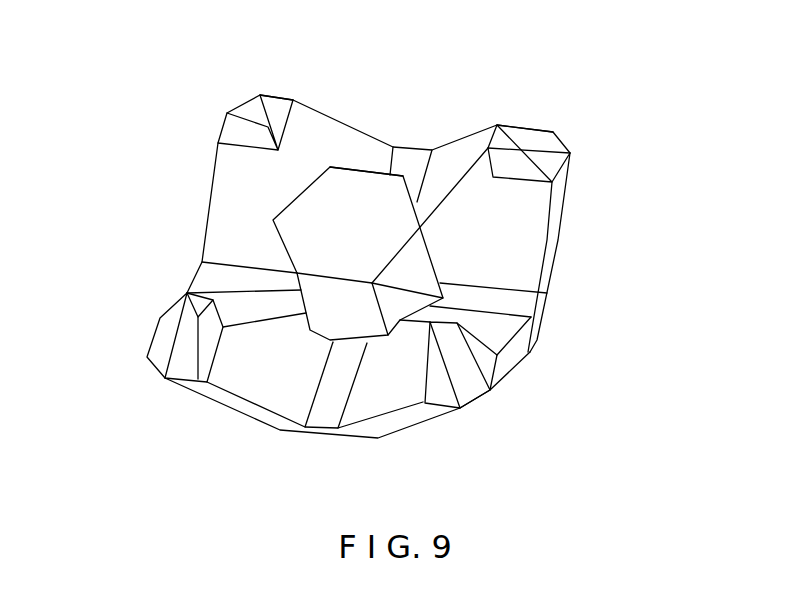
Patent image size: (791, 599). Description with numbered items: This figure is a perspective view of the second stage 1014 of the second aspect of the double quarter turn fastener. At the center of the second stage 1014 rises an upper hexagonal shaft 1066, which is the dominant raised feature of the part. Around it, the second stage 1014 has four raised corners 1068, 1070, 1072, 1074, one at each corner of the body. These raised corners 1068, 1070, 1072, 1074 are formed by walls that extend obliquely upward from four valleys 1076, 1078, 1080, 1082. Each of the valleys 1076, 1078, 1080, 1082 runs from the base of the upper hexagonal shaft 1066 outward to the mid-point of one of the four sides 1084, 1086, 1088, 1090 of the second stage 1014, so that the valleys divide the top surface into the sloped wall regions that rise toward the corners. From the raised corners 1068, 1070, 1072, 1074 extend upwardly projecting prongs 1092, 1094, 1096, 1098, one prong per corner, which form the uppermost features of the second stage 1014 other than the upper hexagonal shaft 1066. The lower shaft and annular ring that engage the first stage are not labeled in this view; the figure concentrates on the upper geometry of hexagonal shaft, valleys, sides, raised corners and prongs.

The second stage 1014 is at (641, 180).
The upper hexagonal shaft 1066 is at (368, 187).
The raised corner 1068 is at (488, 393).
The raised corner 1070 is at (570, 148).
The raised corner 1072 is at (224, 117).
The raised corner 1074 is at (155, 368).
The valley 1076 is at (537, 312).
The valley 1078 is at (420, 147).
The valley 1080 is at (202, 262).
The valley 1082 is at (308, 431).
The side 1084 is at (548, 292).
The side 1086 is at (382, 137).
The side 1088 is at (187, 293).
The side 1090 is at (292, 432).
The upwardly extending prong 1092 is at (433, 327).
The upwardly extending prong 1094 is at (503, 126).
The upwardly extending prong 1096 is at (260, 95).
The upwardly extending prong 1098 is at (200, 308).